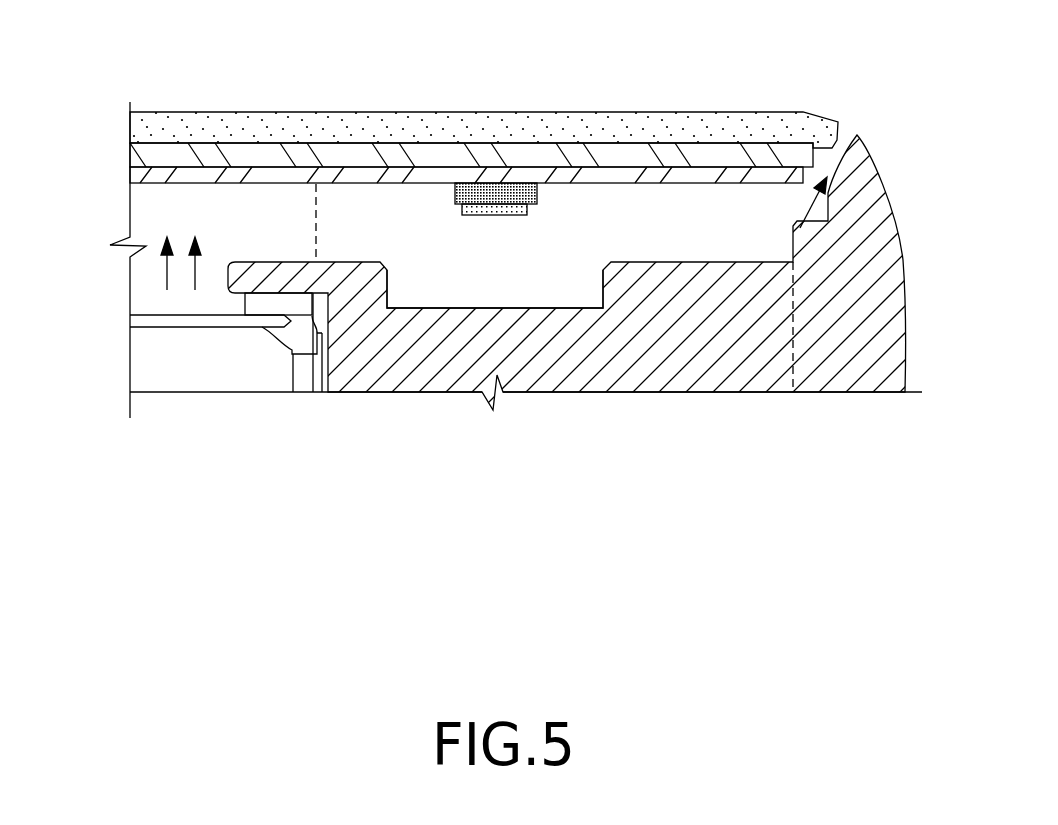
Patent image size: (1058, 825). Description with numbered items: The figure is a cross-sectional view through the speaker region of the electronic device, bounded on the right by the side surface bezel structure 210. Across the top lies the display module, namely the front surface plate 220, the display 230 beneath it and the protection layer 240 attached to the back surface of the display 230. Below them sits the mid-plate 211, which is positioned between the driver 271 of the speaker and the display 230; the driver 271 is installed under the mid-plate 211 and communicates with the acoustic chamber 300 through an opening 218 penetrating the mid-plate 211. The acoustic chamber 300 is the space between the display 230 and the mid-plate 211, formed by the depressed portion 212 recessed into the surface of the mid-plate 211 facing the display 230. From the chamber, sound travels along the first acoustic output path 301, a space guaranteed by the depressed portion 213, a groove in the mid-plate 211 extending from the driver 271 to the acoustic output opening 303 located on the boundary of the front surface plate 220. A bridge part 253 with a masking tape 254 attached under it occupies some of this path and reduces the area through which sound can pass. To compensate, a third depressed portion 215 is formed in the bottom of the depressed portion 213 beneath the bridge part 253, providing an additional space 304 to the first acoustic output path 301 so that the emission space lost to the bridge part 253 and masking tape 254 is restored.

The side surface bezel structure 210 is at (880, 243).
The mid-plate 211 is at (665, 378).
The depressed portion 212 is at (281, 262).
The depressed portion 213 is at (335, 262).
The third depressed portion 215 is at (533, 310).
The opening 218 is at (228, 276).
The front surface plate 220 is at (181, 123).
The display 230 is at (137, 155).
The protection layer 240 is at (138, 173).
The bridge part 253 is at (455, 190).
The masking tape 254 is at (462, 212).
The driver 271 is at (218, 327).
The acoustic chamber 300 is at (138, 210).
The first acoustic output path 301 is at (360, 248).
The acoustic output opening 303 is at (850, 118).
The additional space 304 is at (426, 288).